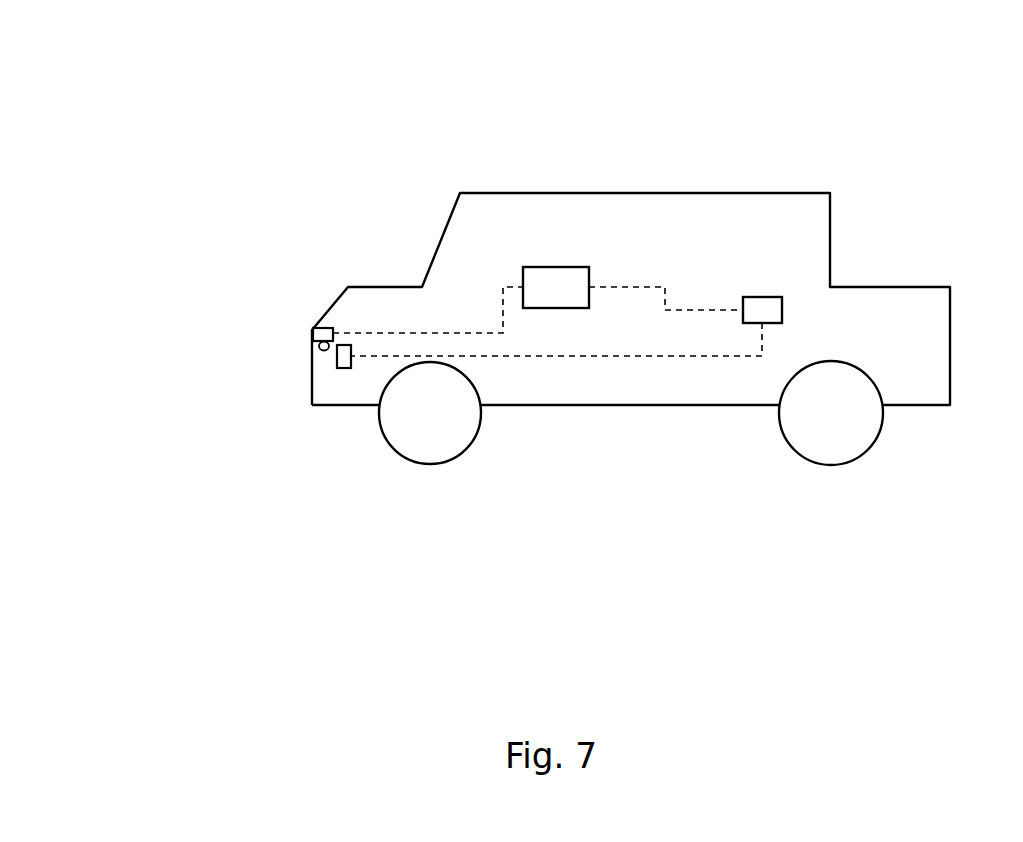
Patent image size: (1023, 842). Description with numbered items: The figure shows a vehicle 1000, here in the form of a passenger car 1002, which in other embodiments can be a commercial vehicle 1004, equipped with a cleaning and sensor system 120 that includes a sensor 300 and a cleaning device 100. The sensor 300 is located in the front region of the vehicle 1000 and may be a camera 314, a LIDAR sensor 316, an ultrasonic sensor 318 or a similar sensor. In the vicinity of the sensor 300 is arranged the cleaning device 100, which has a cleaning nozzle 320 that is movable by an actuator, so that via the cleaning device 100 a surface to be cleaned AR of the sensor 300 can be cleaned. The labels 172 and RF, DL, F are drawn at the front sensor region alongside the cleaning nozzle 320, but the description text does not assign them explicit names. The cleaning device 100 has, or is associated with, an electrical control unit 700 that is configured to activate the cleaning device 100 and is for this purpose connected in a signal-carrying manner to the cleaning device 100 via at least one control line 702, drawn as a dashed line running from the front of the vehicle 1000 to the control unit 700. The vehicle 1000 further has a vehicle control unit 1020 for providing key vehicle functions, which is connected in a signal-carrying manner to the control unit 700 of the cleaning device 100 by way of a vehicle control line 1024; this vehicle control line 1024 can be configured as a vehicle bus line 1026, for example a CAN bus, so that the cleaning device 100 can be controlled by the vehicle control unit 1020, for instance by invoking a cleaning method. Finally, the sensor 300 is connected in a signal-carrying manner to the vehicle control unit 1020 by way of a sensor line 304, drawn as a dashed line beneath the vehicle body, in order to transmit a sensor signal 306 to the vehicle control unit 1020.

The vehicle 1000 is at (635, 252).
The passenger car 1002 is at (635, 252).
The commercial vehicle 1004 is at (958, 64).
The electrical control unit 700 is at (573, 267).
The control line 702 is at (497, 303).
The vehicle control line 1024 is at (686, 259).
The vehicle bus line 1026 is at (710, 308).
The vehicle control unit 1020 is at (766, 303).
The sensor line 304 is at (556, 396).
The sensor signal 306 is at (498, 358).
The cleaning device 100 is at (225, 306).
The cleaning and sensor system 120 is at (297, 331).
The detection element 172 is at (188, 368).
The cleaning nozzle 320 is at (188, 368).
The radio frequency signal RF is at (188, 368).
The data link DL is at (188, 368).
The field F is at (328, 351).
The surface to be cleaned AR is at (328, 362).
The sensor 300 is at (299, 421).
The camera 314 is at (299, 421).
The LIDAR sensor 316 is at (299, 421).
The ultrasonic sensor 318 is at (299, 421).